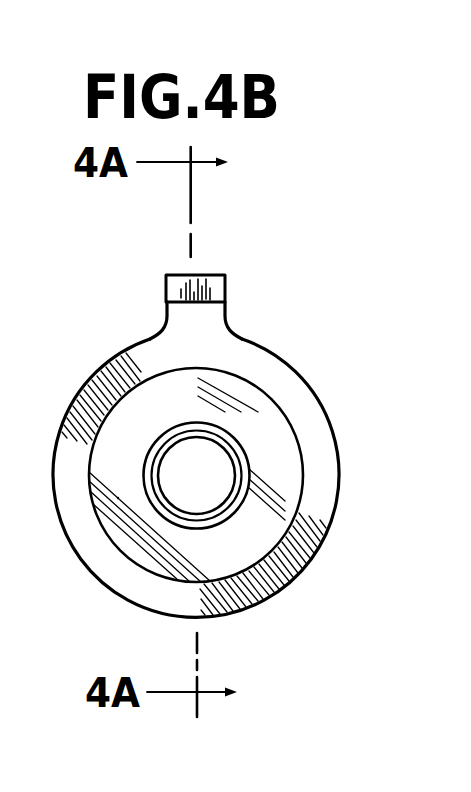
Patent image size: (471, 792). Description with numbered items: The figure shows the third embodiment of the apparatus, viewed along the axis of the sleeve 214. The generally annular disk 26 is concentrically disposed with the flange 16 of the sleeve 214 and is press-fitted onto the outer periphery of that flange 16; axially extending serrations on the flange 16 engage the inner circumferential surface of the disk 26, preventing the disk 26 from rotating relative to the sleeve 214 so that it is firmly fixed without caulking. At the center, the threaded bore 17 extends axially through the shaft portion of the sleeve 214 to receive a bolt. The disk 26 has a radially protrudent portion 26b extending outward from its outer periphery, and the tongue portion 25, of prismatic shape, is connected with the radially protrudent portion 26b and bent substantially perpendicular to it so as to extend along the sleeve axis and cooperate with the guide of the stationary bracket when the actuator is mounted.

The generally annular disk 26 is at (320, 417).
The radially protrudent portion 26b is at (172, 317).
The tongue portion 25 is at (210, 276).
The flange 16 is at (143, 552).
The sleeve 214 is at (268, 416).
The threaded bore 17 is at (163, 464).